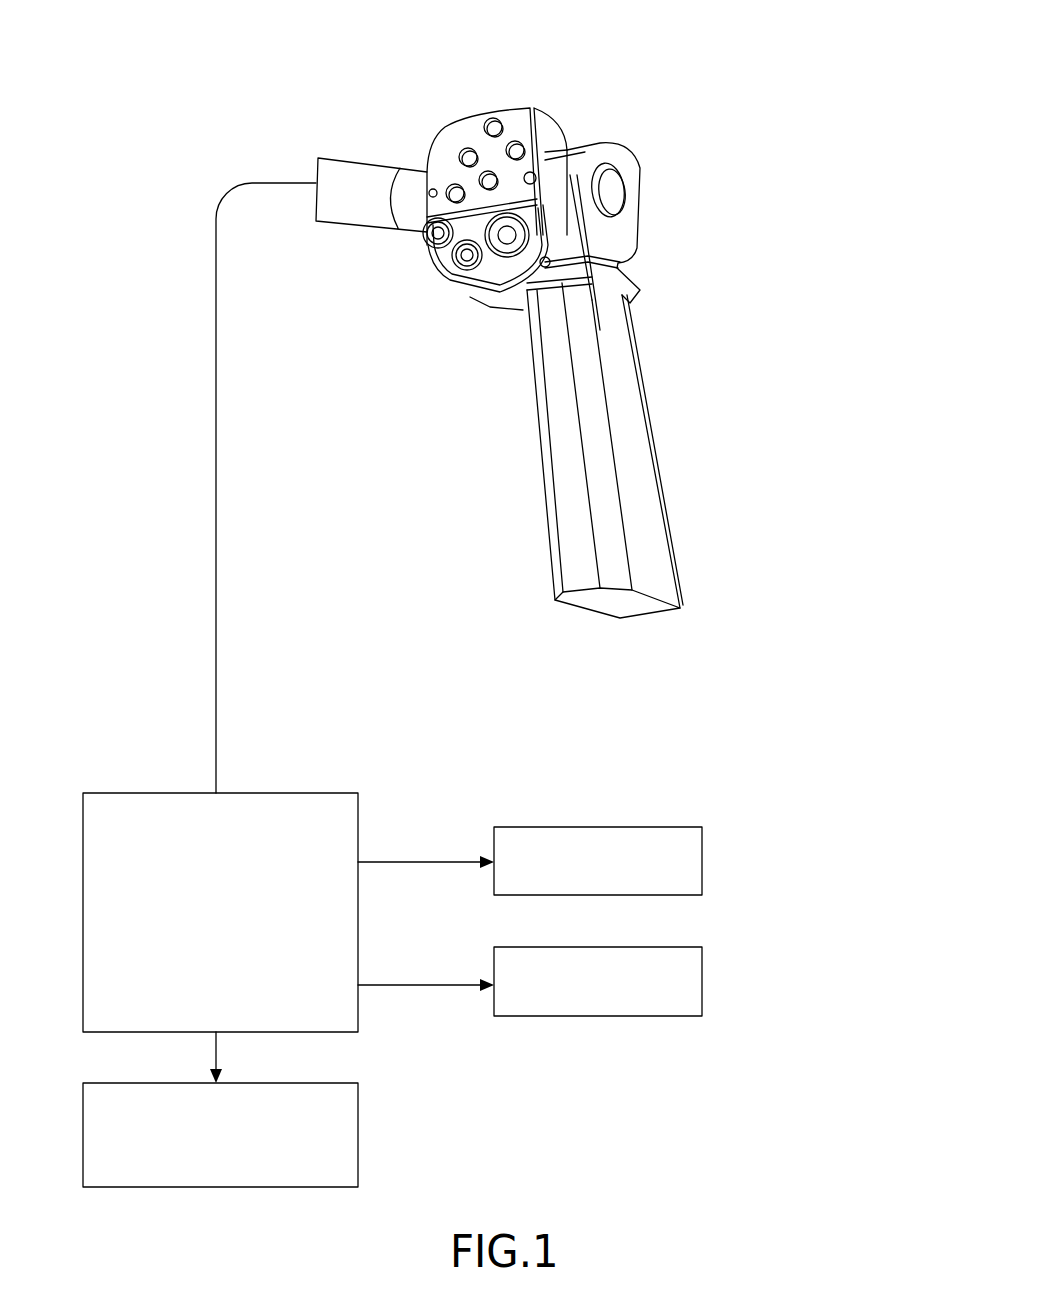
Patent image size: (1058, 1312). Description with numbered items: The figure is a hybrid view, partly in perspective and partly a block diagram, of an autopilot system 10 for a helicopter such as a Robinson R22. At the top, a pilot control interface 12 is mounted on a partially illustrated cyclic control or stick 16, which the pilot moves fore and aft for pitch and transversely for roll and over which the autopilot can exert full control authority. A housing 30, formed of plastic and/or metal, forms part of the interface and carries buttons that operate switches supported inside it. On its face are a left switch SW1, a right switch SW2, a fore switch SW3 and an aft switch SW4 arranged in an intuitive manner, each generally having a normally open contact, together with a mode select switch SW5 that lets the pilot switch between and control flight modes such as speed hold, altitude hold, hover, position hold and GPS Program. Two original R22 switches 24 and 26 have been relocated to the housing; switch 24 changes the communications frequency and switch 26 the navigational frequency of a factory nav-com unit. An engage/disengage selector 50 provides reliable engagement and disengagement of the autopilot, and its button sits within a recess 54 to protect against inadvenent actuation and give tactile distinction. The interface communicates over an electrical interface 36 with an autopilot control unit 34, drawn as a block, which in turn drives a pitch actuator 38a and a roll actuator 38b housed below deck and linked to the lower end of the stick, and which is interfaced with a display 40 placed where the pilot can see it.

The autopilot system 10 is at (648, 68).
The pilot control interface 12 is at (548, 100).
The cyclic control or stick 16 is at (628, 362).
The switch 24 is at (437, 240).
The switch 26 is at (467, 262).
The housing 30 is at (552, 200).
The autopilot control unit 34 is at (268, 793).
The electrical interface 36 is at (217, 363).
The pitch actuator 38a is at (612, 827).
The roll actuator 38b is at (702, 982).
The display 40 is at (358, 1132).
The engage/disengage selector 50 is at (507, 244).
The recess 54 is at (528, 230).
The left switch SW1 is at (459, 157).
The right switch SW2 is at (525, 151).
The fore switch SW3 is at (493, 118).
The aft switch SW4 is at (490, 172).
The mode select switch SW5 is at (454, 202).